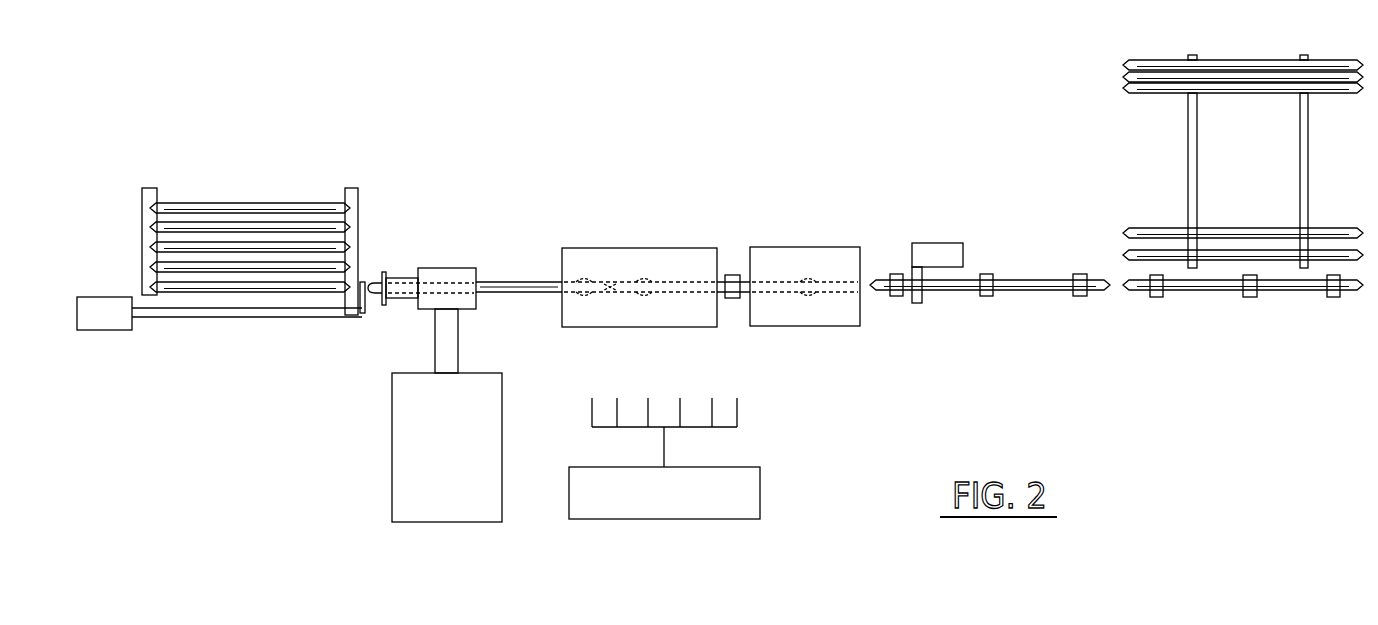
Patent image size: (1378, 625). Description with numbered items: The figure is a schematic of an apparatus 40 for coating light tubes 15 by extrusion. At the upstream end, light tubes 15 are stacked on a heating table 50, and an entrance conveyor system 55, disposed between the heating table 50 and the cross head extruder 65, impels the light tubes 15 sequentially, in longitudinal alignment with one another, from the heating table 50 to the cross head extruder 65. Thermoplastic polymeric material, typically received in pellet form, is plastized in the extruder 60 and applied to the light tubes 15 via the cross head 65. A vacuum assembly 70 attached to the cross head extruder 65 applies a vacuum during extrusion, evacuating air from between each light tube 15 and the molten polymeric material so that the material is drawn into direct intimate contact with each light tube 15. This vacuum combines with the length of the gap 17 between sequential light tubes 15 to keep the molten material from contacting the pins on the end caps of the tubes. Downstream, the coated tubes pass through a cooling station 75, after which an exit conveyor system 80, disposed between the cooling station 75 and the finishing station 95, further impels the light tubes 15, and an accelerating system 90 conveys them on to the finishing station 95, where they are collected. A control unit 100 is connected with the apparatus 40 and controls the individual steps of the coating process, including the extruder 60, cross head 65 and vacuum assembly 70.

The light tubes 15 is at (244, 199).
The gap 17 is at (610, 292).
The apparatus 40 is at (620, 150).
The heating table 50 is at (350, 186).
The entrance conveyor system 55 is at (367, 300).
The extruder 60 is at (463, 456).
The cross head extruder 65 is at (447, 268).
The vacuum assembly 70 is at (400, 275).
The cooling station 75 is at (711, 291).
The exit conveyor system 80 is at (734, 300).
The accelerating system 90 is at (940, 243).
The finishing station 95 is at (1148, 183).
The control unit 100 is at (760, 490).